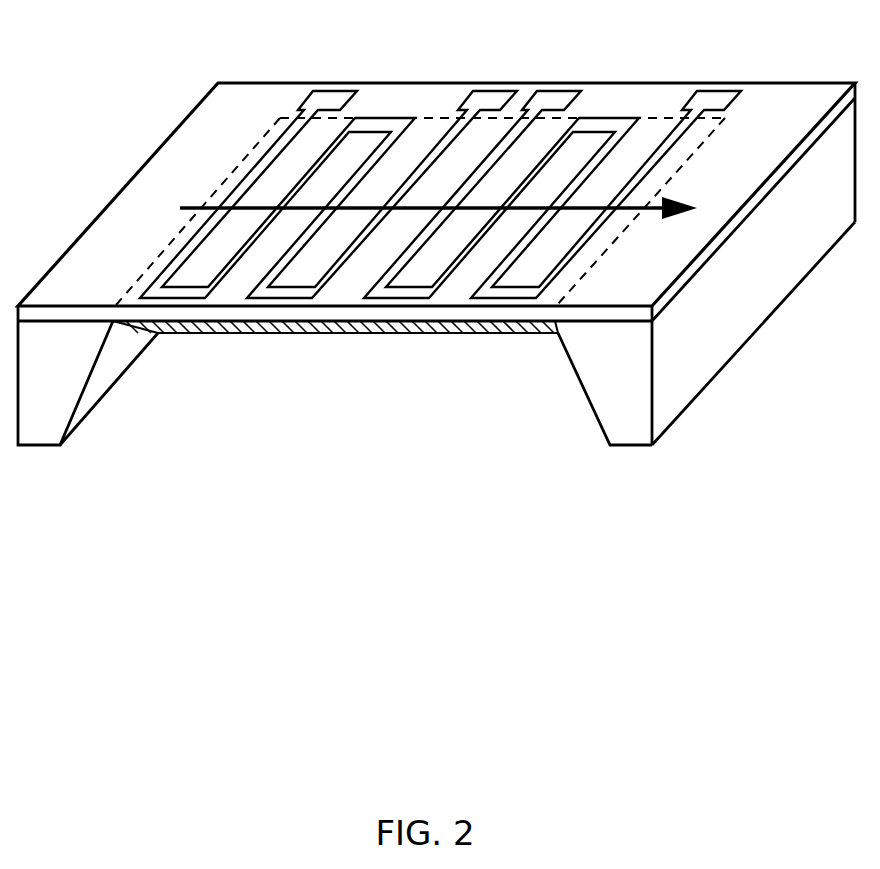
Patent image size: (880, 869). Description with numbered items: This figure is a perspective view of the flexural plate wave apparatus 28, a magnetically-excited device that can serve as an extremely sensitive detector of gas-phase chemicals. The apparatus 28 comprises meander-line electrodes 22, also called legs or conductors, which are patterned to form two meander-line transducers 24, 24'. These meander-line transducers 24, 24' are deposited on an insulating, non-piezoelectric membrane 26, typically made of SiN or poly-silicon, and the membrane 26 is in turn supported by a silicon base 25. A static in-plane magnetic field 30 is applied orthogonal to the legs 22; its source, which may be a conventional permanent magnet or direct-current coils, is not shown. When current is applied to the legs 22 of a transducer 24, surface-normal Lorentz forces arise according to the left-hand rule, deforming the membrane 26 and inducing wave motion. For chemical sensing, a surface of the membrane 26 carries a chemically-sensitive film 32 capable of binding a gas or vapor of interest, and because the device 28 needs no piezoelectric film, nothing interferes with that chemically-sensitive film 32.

The meander-line electrodes 22 is at (440, 209).
The meander-line transducer 24 is at (329, 154).
The meander-line transducer 24' is at (552, 154).
The silicon base 25 is at (38, 369).
The membrane 26 is at (91, 279).
The flexural plate wave apparatus 28 is at (436, 228).
The static in-plane magnetic field 30 is at (653, 226).
The chemically-sensitive film 32 is at (268, 334).